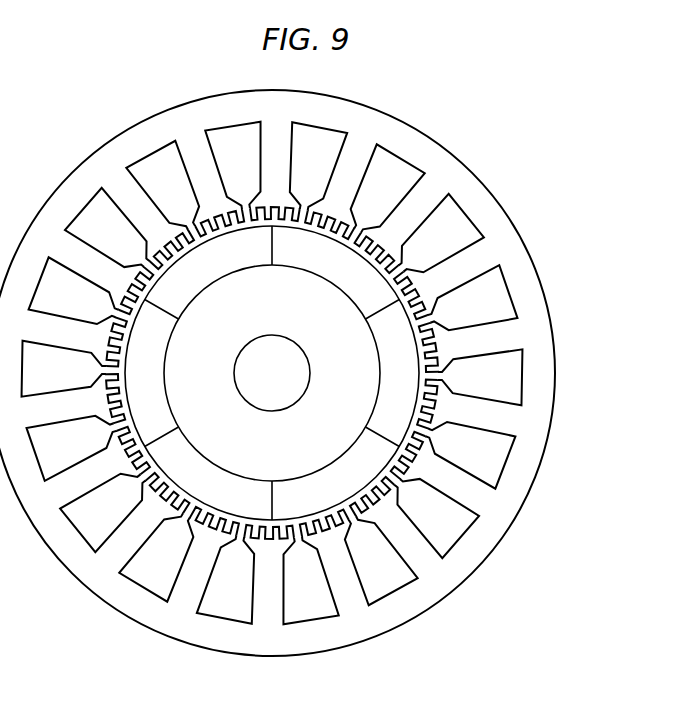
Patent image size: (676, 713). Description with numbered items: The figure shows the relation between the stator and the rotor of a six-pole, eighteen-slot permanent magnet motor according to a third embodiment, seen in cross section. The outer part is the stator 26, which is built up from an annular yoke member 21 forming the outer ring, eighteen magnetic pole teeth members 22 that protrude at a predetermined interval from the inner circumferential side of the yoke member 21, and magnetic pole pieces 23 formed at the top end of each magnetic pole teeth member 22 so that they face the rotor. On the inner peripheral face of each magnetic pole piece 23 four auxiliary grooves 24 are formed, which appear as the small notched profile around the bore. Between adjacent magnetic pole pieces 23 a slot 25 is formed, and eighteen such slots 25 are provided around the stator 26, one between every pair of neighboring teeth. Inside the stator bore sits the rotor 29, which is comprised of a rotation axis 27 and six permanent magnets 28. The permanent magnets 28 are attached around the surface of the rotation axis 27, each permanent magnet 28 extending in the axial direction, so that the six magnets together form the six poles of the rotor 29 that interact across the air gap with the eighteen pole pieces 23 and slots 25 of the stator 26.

The annular yoke member 21 is at (450, 173).
The magnetic pole teeth member 22 is at (490, 250).
The magnetic pole piece 23 is at (432, 287).
The auxiliary groove 24 is at (430, 352).
The slot 25 is at (440, 375).
The stator 26 is at (598, 151).
The rotation axis 27 is at (343, 415).
The permanent magnet 28 is at (355, 482).
The rotor 29 is at (589, 596).